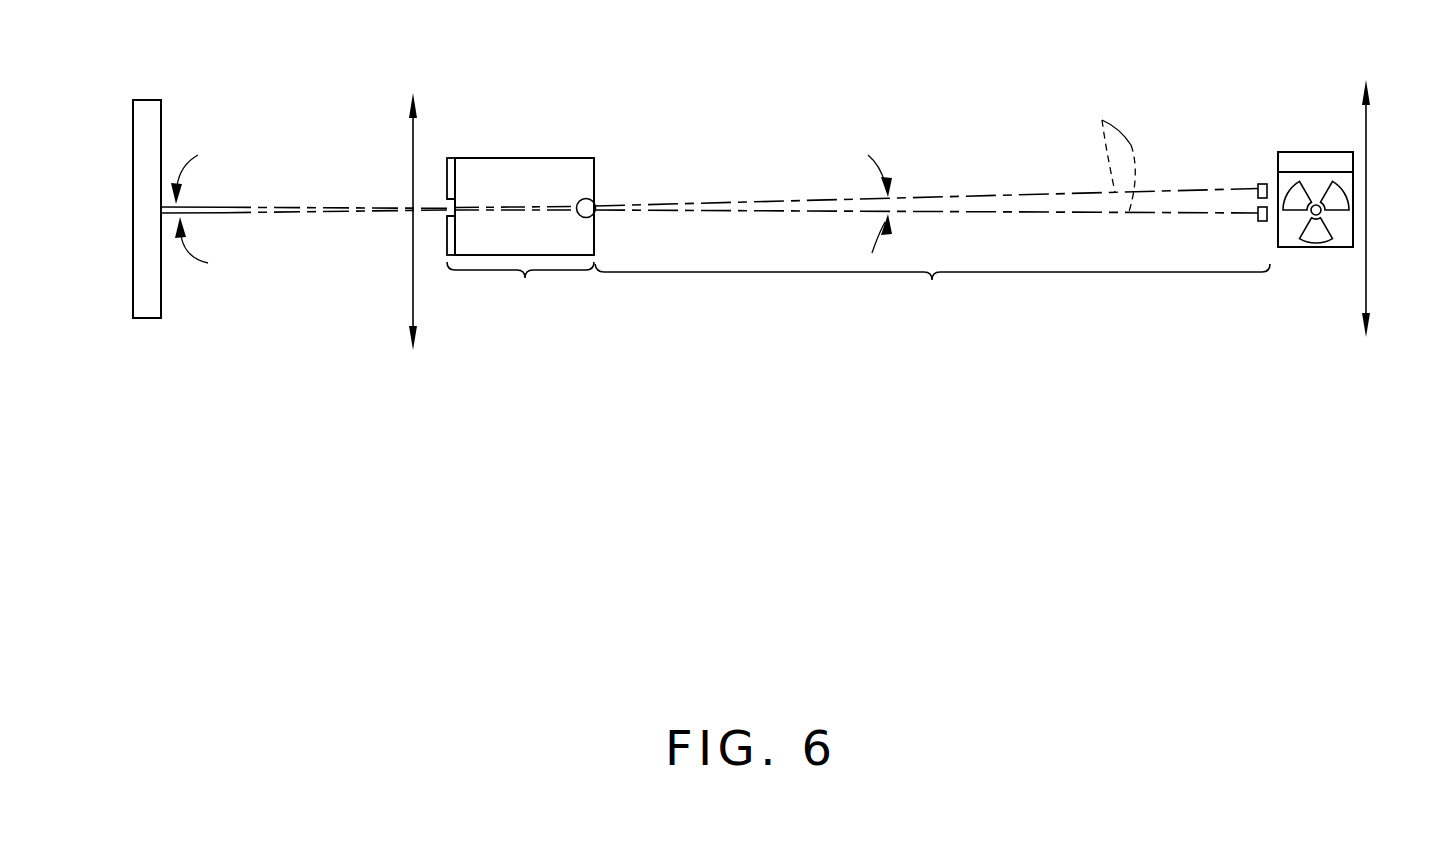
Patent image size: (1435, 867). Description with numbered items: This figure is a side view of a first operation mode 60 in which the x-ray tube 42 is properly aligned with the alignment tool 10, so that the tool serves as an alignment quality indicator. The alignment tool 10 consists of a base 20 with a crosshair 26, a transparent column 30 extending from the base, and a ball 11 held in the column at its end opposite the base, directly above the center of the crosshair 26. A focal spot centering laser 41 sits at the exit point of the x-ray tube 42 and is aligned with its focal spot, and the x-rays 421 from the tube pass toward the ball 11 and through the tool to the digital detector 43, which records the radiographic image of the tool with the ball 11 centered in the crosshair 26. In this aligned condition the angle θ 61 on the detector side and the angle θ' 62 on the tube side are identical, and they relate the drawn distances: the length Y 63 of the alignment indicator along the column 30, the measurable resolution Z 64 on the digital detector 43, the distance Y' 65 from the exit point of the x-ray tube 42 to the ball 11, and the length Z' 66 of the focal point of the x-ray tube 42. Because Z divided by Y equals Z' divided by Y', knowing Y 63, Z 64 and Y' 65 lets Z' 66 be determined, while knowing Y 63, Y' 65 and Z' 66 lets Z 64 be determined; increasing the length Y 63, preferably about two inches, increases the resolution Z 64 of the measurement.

The alignment tool 10 is at (468, 65).
The ball 11 is at (580, 198).
The base 20 is at (447, 248).
The crosshair 26 is at (447, 205).
The column 30 is at (522, 170).
The focal spot centering laser 41 is at (1338, 160).
The x-ray tube 42 is at (1344, 240).
The digital detector 43 is at (145, 100).
The first operation mode 60 is at (648, 498).
The angle θ 61 is at (178, 172).
The angle θ' 62 is at (889, 180).
The length Y 63 is at (525, 278).
The distance Z 64 is at (364, 221).
The distance Y' 65 is at (932, 280).
The distance Z' 66 is at (1393, 190).
The x-rays 421 is at (1096, 159).